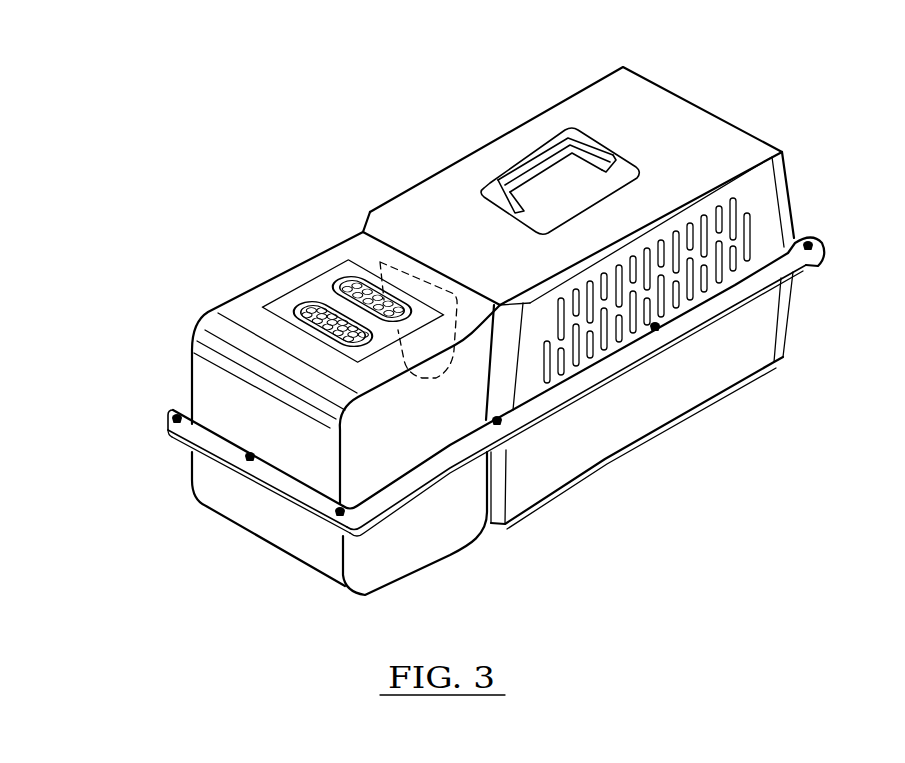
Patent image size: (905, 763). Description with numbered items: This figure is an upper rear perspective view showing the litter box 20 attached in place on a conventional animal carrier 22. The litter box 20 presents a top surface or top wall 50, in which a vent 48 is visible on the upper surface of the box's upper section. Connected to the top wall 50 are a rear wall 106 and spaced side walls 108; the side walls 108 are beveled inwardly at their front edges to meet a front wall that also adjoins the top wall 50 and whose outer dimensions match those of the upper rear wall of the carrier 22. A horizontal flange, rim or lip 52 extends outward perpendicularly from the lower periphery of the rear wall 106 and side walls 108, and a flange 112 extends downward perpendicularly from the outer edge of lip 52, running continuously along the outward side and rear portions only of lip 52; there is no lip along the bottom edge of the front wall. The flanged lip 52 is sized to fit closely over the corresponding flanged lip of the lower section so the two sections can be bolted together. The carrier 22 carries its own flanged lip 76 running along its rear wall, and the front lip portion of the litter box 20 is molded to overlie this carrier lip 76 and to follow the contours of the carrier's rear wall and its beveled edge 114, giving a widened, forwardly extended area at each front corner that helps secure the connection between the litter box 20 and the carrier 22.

The litter box 20 is at (316, 244).
The carrier 22 is at (648, 97).
The vent 48 is at (275, 290).
The top wall 50 is at (298, 272).
The flanged lip 52 is at (217, 448).
The flanged lip of the carrier 76 is at (585, 382).
The rear wall 106 is at (200, 380).
The side walls 108 is at (407, 435).
The flange 112 is at (267, 497).
The beveled edge 114 is at (515, 357).